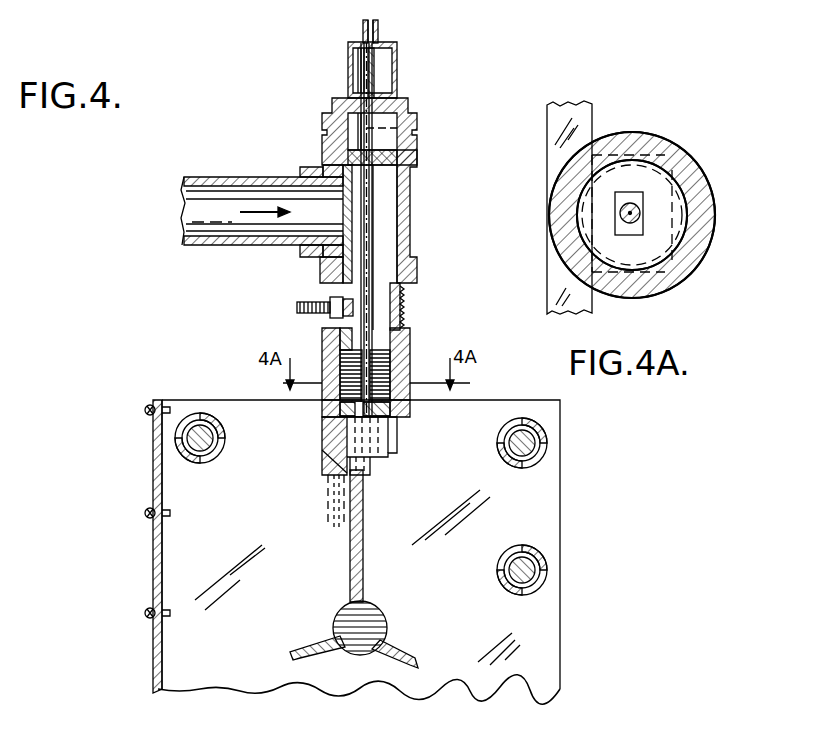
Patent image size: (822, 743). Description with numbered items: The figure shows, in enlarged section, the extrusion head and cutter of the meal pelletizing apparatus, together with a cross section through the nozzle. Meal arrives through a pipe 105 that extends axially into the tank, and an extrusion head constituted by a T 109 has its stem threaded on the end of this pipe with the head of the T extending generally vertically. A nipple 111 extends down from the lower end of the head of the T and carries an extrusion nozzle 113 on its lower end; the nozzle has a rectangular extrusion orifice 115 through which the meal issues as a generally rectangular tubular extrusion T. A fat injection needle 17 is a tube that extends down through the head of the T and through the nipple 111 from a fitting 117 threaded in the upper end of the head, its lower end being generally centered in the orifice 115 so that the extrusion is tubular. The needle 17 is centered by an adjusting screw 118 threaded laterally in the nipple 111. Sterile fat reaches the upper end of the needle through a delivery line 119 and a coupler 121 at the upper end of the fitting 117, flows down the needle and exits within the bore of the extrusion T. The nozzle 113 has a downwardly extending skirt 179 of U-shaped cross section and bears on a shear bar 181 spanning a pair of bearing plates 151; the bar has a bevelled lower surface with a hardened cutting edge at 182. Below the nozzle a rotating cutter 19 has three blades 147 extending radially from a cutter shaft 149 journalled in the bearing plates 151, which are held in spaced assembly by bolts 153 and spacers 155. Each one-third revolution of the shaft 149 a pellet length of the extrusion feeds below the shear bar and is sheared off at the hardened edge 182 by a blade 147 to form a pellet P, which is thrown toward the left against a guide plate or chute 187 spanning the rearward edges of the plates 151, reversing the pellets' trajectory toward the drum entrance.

In FIG. 4, the delivery line 119 is at (379, 27).
In FIG. 4, the coupler 121 is at (398, 70).
In FIG. 4, the fitting 117 is at (417, 118).
In FIG. 4, the T 109 is at (412, 198).
In FIG. 4, the pipe 105 is at (196, 178).
In FIG. 4, the fat injection needle 17 is at (373, 249).
In FIG. 4A, the fat injection needle 17 is at (641, 211).
In FIG. 4, the adjusting screw 118 is at (298, 308).
In FIG. 4, the nipple 111 is at (402, 301).
In FIG. 4, the extrusion nozzle 113 is at (410, 338).
In FIG. 4A, the extrusion nozzle 113 is at (714, 223).
In FIG. 4, the rectangular extrusion orifice 115 is at (338, 409).
In FIG. 4A, the rectangular extrusion orifice 115 is at (636, 226).
In FIG. 4, the shear bar 181 is at (330, 441).
In FIG. 4A, the shear bar 181 is at (548, 144).
In FIG. 4, the skirt 179 is at (396, 449).
In FIG. 4A, the skirt 179 is at (618, 160).
In FIG. 4, the tubular extrusion T is at (380, 440).
In FIG. 4, the hardened cutting edge 182 is at (356, 468).
In FIG. 4, the pellet P is at (326, 516).
In FIG. 4, the rotating cutter 19 is at (370, 574).
In FIG. 4, the blade 147 is at (352, 552).
In FIG. 4, the cutter shaft 149 is at (387, 625).
In FIG. 4, the bearing plate 151 is at (232, 509).
In FIG. 4, the guide plate or chute 187 is at (153, 570).
In FIG. 4, the spacer 155 is at (193, 413).
In FIG. 4, the bolt 153 is at (211, 432).